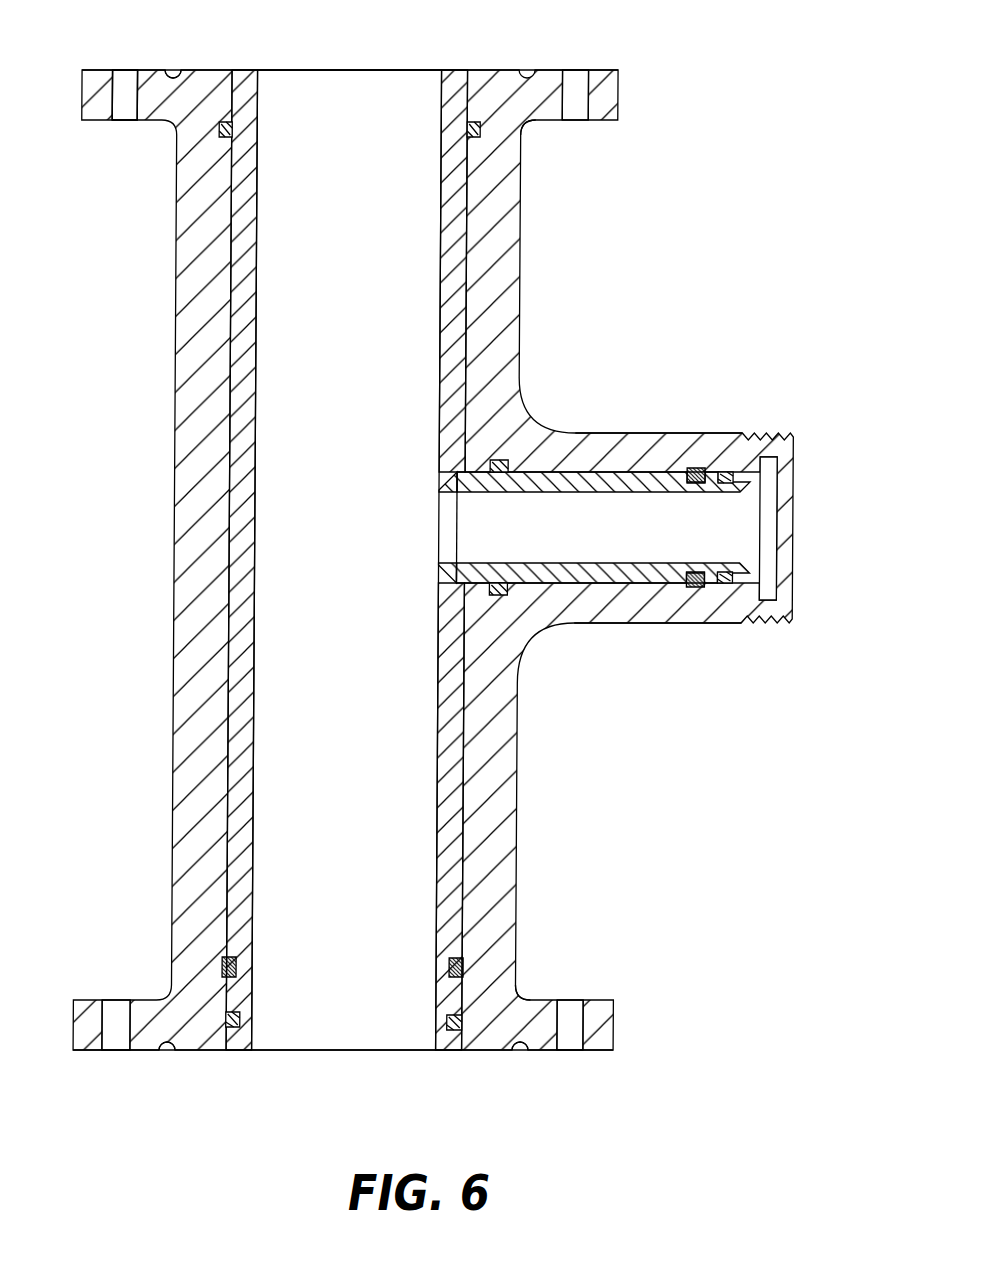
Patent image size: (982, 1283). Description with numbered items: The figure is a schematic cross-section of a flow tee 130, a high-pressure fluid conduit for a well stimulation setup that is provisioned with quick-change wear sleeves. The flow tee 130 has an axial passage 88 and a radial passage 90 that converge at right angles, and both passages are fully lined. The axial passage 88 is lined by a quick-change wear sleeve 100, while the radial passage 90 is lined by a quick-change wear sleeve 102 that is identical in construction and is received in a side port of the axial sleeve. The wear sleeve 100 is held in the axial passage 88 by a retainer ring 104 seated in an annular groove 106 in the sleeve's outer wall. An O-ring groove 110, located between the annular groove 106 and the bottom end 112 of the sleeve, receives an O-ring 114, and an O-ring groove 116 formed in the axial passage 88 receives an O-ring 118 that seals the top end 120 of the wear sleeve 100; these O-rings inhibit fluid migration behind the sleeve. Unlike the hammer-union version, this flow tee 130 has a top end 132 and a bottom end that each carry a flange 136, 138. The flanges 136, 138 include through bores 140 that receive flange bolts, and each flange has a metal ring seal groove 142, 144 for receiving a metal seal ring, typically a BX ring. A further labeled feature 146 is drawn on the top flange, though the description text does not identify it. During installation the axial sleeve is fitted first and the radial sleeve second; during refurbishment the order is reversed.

The axial passage 88 is at (465, 305).
The radial passage 90 is at (663, 433).
The quick-change wear sleeve 100 is at (340, 637).
The quick-change wear sleeve 102 is at (612, 539).
The retainer ring 104 is at (688, 480).
The annular groove 106 is at (688, 577).
The O-ring groove 110 is at (735, 477).
The bottom end 112 is at (288, 1054).
The O-ring 114 is at (731, 484).
The O-ring groove 116 is at (478, 138).
The O-ring 118 is at (234, 128).
The top end 120 is at (390, 70).
The flow tee 130 is at (606, 384).
The top end 132 is at (488, 69).
The flange 136 is at (549, 128).
The flange 138 is at (537, 1000).
The through bores 140 is at (575, 85).
The metal ring seal groove 142 is at (174, 72).
The metal ring seal groove 144 is at (167, 1049).
The bolt hole 146 is at (121, 82).